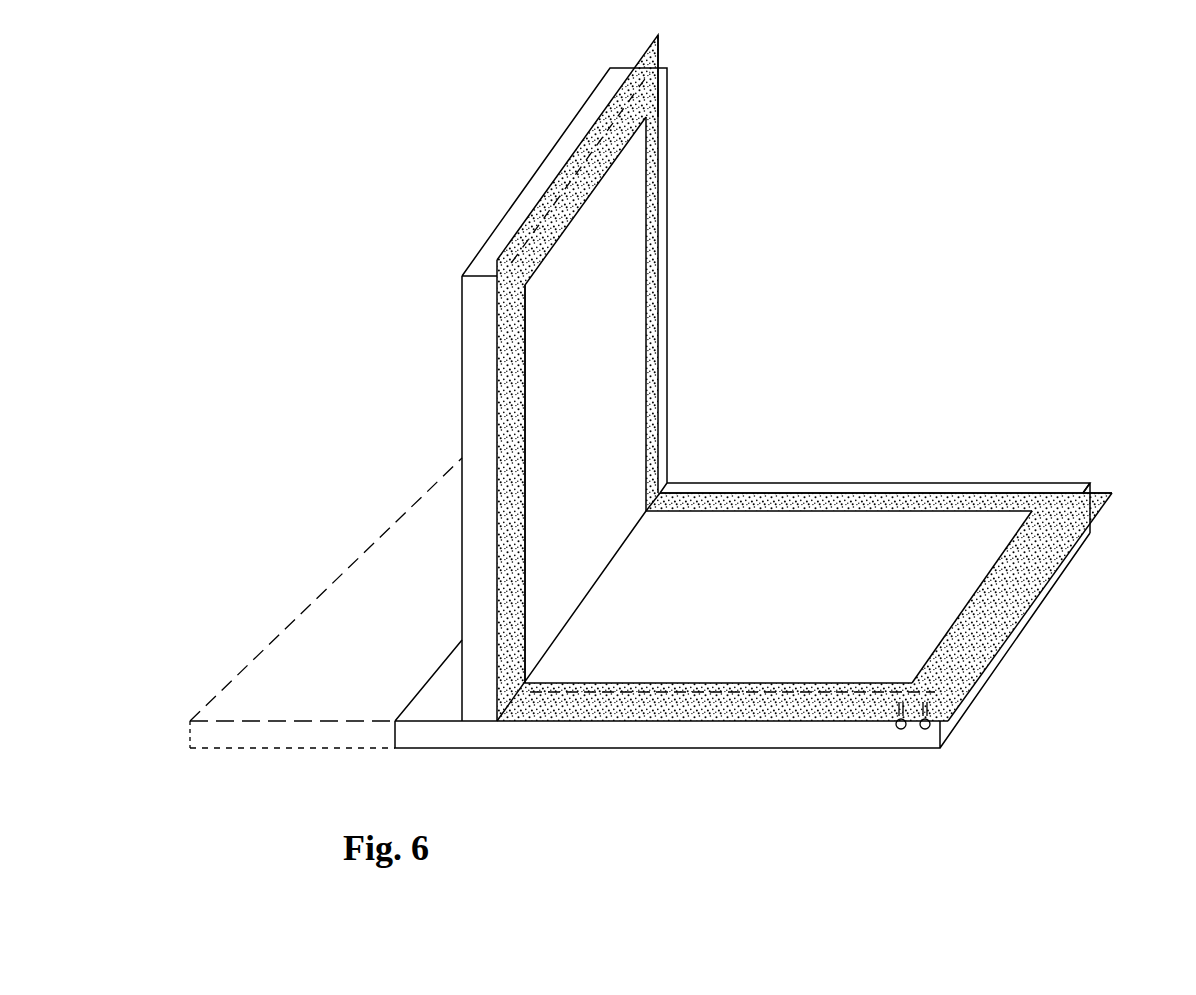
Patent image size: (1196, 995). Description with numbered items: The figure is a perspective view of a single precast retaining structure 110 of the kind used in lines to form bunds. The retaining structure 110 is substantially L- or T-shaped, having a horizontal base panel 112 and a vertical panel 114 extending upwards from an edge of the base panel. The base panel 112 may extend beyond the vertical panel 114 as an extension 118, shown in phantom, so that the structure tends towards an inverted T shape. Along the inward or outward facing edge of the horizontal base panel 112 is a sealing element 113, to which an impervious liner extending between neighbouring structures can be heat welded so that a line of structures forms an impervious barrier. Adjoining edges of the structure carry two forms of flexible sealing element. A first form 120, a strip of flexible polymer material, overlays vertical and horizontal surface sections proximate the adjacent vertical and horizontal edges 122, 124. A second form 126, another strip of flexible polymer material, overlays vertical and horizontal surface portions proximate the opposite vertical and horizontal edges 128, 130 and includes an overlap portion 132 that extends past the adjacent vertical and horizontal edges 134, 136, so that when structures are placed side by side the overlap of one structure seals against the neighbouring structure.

The retaining structure 110 is at (926, 252).
The horizontal base panel 112 is at (960, 600).
The sealing element 113 is at (980, 650).
The vertical panel 114 is at (615, 336).
The extension 118 is at (343, 618).
The first form of flexible sealing element 120 is at (656, 268).
The vertical edge 122 is at (667, 186).
The horizontal edge 124 is at (972, 483).
The second form of flexible sealing element 126 is at (497, 585).
The opposite vertical edge 128 is at (684, 127).
The opposite horizontal edge 130 is at (705, 742).
The overlap portion 132 is at (510, 527).
The adjacent vertical edge 134 is at (515, 428).
The adjacent horizontal edge 136 is at (662, 692).